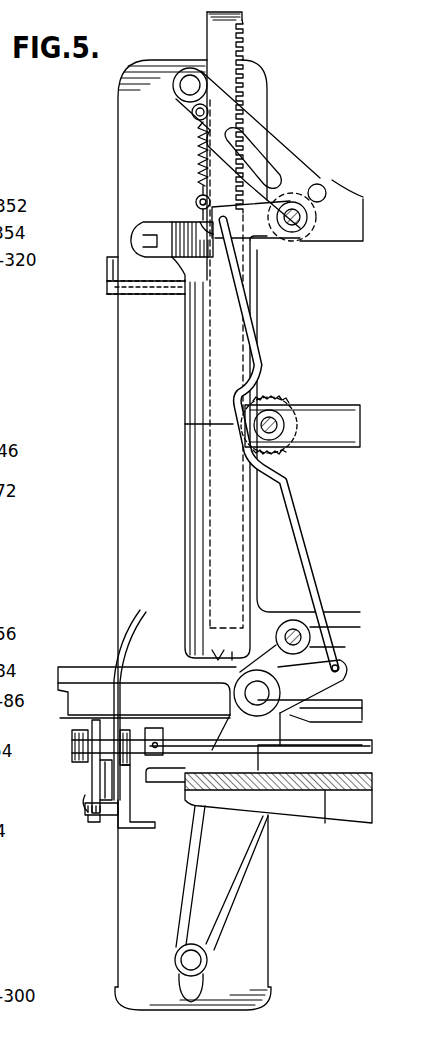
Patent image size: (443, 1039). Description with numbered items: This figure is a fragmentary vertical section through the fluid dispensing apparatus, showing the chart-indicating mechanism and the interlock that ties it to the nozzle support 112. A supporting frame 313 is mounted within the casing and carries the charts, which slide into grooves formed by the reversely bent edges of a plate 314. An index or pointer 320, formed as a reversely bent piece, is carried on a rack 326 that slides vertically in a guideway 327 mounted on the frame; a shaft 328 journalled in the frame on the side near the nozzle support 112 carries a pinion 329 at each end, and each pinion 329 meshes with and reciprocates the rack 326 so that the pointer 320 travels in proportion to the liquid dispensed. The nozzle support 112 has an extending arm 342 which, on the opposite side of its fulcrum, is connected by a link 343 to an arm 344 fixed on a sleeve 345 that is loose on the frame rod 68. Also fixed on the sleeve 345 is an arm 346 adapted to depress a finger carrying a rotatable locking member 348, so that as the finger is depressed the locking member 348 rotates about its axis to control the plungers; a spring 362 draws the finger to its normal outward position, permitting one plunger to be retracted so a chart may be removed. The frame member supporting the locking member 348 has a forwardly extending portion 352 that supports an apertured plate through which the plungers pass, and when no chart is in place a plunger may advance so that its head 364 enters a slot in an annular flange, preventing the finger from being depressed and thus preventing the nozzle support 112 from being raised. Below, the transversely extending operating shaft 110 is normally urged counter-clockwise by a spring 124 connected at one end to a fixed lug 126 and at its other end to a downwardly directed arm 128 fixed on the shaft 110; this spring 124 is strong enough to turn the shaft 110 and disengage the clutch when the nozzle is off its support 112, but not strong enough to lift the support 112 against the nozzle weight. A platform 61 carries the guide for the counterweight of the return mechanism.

The plate 314 is at (126, 377).
The rack 326 is at (233, 49).
The guideway 327 is at (250, 587).
The spring 362 is at (198, 152).
The arm 346 is at (198, 230).
The forwardly extending portion 352 is at (153, 222).
The head 364 is at (160, 240).
The locking member 348 is at (183, 258).
The index or pointer 320 is at (108, 262).
The supporting frame 313 is at (262, 143).
The spacing rod 68 is at (320, 203).
The arm 344 is at (265, 228).
The sleeve 345 is at (294, 222).
The link 343 is at (303, 523).
The shaft 328 is at (277, 428).
The pinion 329 is at (278, 400).
The extending arm 342 is at (314, 688).
The nozzle support 112 is at (74, 668).
The operating shaft 110 is at (300, 748).
The platform 61 is at (326, 796).
The downwardly directed arm 128 is at (93, 768).
The spring 124 is at (92, 801).
The fixed lug 126 is at (86, 812).